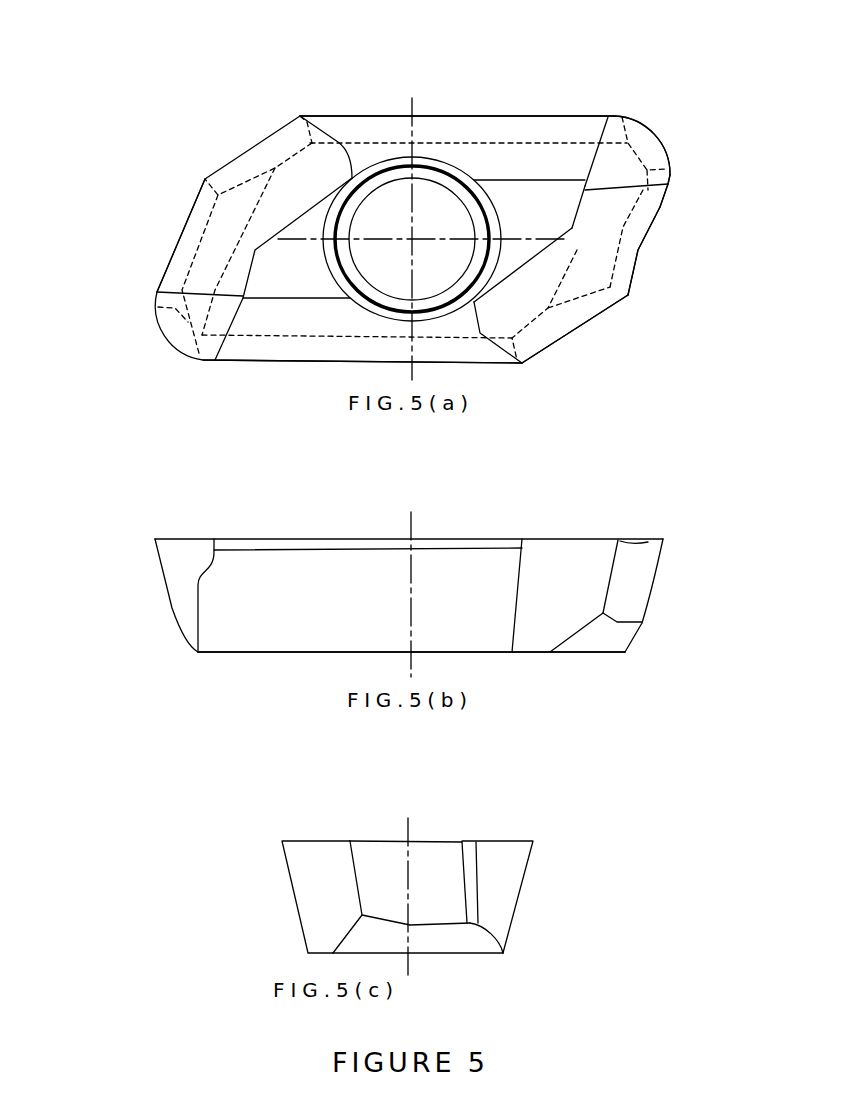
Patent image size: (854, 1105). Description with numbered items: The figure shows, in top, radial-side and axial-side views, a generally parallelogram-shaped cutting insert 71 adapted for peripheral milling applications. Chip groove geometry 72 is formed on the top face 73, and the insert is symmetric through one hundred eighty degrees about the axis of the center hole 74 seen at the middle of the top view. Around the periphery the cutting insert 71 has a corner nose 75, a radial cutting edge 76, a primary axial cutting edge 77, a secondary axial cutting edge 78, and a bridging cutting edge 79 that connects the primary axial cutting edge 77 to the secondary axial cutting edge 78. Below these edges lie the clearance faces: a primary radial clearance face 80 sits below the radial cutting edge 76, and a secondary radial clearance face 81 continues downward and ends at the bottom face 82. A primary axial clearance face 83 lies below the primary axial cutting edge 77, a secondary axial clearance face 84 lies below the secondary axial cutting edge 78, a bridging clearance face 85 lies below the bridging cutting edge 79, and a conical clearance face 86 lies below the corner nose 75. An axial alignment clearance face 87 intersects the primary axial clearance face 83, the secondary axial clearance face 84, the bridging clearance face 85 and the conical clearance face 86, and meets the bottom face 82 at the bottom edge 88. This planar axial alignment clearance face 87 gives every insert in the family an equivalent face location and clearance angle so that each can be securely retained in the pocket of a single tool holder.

In FIG. 5A, the cutting insert 71 is at (192, 128).
In FIG. 5A, the chip groove geometry 72 is at (270, 318).
In FIG. 5A, the top face 73 is at (268, 278).
In FIG. 5B, the top face 73 is at (322, 537).
In FIG. 5A, the center hole 74 is at (412, 240).
In FIG. 5A, the corner nose 75 is at (652, 132).
In FIG. 5A, the radial cutting edge 76 is at (479, 113).
In FIG. 5A, the primary axial cutting edge 77 is at (660, 178).
In FIG. 5A, the secondary axial cutting edge 78 is at (593, 320).
In FIG. 5A, the bridging cutting edge 79 is at (637, 253).
In FIG. 5A, the primary radial clearance face 80 is at (518, 128).
In FIG. 5B, the primary radial clearance face 80 is at (447, 540).
In FIG. 5A, the secondary radial clearance face 81 is at (368, 153).
In FIG. 5B, the secondary radial clearance face 81 is at (320, 608).
In FIG. 5B, the bottom face 82 is at (470, 653).
In FIG. 5A, the primary axial clearance face 83 is at (658, 177).
In FIG. 5C, the primary axial clearance face 83 is at (468, 852).
In FIG. 5A, the secondary axial clearance face 84 is at (557, 325).
In FIG. 5B, the secondary axial clearance face 84 is at (562, 565).
In FIG. 5C, the secondary axial clearance face 84 is at (313, 868).
In FIG. 5A, the bridging clearance face 85 is at (633, 225).
In FIG. 5B, the bridging clearance face 85 is at (640, 567).
In FIG. 5C, the bridging clearance face 85 is at (438, 870).
In FIG. 5A, the conical clearance face 86 is at (640, 138).
In FIG. 5C, the conical clearance face 86 is at (500, 863).
In FIG. 5A, the axial alignment clearance face 87 is at (592, 262).
In FIG. 5B, the axial alignment clearance face 87 is at (605, 633).
In FIG. 5C, the axial alignment clearance face 87 is at (468, 940).
In FIG. 5A, the bottom edge 88 is at (567, 275).
In FIG. 5B, the bottom edge 88 is at (590, 653).
In FIG. 5C, the bottom edge 88 is at (443, 955).